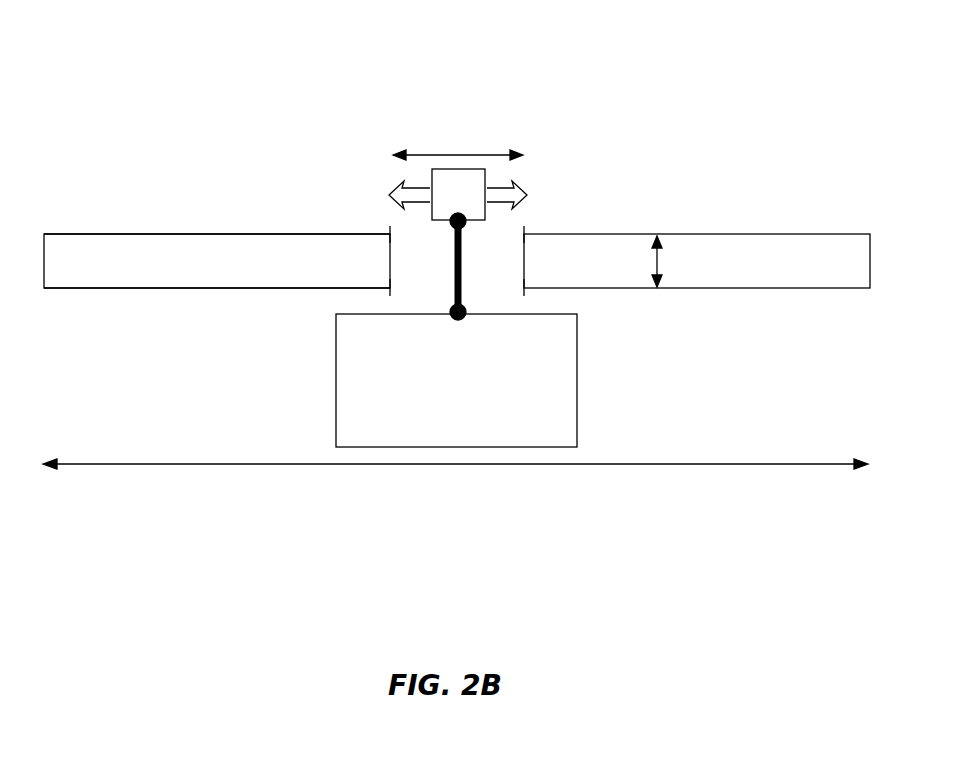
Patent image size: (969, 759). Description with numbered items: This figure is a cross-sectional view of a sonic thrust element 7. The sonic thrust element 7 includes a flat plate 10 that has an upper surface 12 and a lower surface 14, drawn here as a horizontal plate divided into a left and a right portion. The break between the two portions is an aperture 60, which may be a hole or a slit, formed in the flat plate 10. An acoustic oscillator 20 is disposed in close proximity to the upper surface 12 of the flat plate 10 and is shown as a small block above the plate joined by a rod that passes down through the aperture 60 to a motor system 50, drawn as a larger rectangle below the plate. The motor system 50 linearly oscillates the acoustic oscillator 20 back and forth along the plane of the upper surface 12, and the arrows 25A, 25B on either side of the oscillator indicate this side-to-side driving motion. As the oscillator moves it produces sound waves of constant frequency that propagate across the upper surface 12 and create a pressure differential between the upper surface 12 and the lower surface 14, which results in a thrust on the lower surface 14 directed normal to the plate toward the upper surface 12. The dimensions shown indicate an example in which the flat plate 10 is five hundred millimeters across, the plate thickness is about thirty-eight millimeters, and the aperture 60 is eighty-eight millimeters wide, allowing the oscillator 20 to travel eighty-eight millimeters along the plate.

The sonic thrust element 7 is at (610, 62).
The flat plate 10 is at (100, 248).
The upper surface 12 is at (300, 234).
The lower surface 14 is at (216, 289).
The acoustic oscillator 20 is at (441, 221).
The force arrow 25A is at (396, 191).
The force arrow 25B is at (522, 196).
The motor system 50 is at (577, 380).
The aperture 60 is at (484, 262).